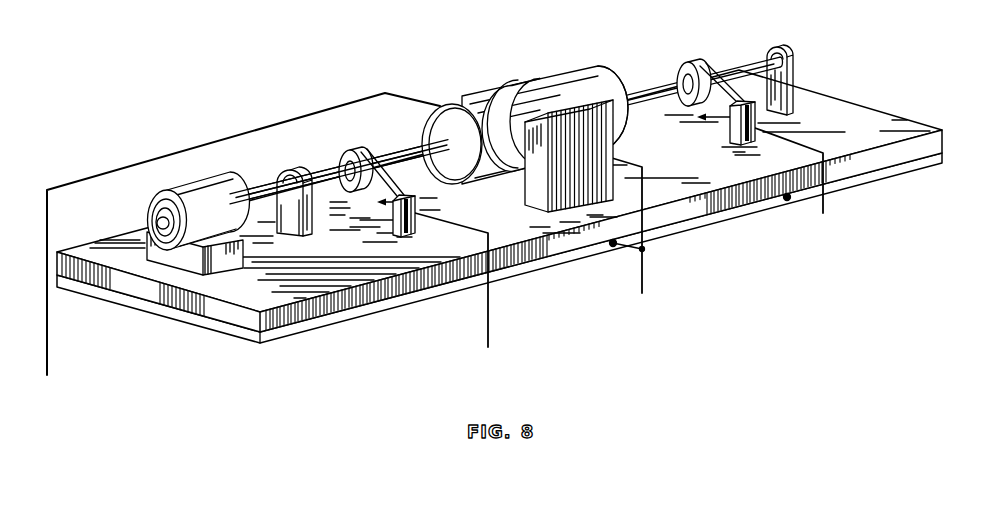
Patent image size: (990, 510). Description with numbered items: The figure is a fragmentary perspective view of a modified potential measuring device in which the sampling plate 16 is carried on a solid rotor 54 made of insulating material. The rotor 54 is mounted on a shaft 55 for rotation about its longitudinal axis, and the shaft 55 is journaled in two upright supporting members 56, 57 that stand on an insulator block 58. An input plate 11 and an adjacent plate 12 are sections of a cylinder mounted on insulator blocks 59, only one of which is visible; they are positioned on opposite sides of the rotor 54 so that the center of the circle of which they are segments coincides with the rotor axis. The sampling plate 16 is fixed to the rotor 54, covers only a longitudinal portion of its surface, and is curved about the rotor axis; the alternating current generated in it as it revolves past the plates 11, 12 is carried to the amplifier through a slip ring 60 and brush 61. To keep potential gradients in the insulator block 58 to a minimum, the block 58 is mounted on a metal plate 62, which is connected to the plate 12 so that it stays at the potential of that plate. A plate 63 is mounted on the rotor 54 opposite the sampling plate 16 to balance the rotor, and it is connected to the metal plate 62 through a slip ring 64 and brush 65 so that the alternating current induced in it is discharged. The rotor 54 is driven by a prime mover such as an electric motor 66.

The input plate 11 is at (452, 103).
The adjacent plate 12 is at (628, 139).
The sampling plate 16 is at (426, 140).
The plate 63 is at (455, 144).
The rotor 54 is at (506, 130).
The shaft 55 is at (383, 157).
The upright supporting member 56 is at (288, 175).
The upright supporting member 57 is at (797, 63).
The insulator block 58 is at (944, 146).
The insulator block 59 is at (530, 196).
The slip ring 60 is at (343, 163).
The brush 61 is at (397, 186).
The metal plate 62 is at (877, 181).
The slip ring 64 is at (683, 72).
The brush 65 is at (737, 94).
The electric motor 66 is at (198, 192).